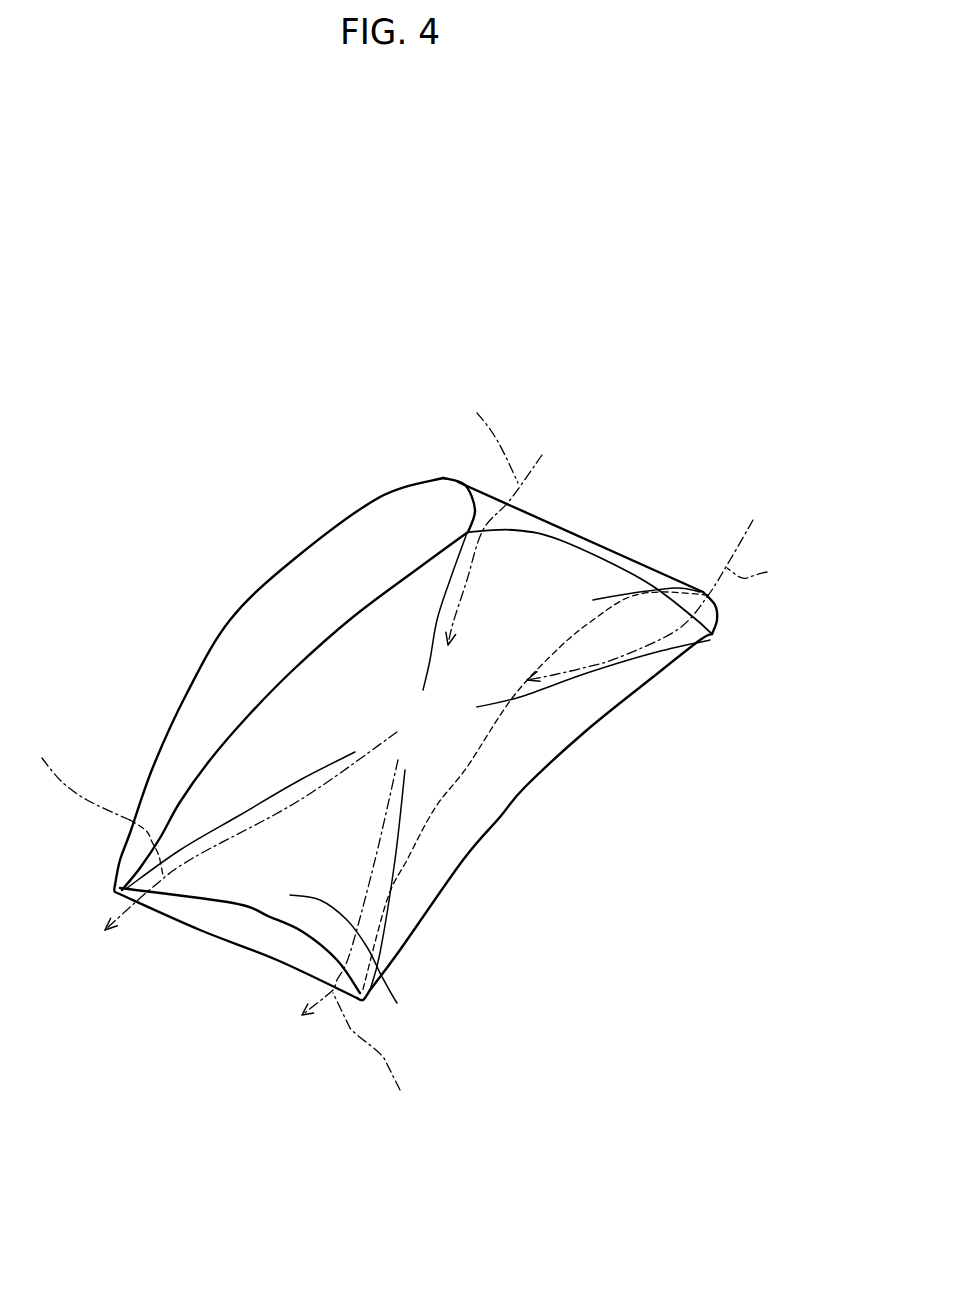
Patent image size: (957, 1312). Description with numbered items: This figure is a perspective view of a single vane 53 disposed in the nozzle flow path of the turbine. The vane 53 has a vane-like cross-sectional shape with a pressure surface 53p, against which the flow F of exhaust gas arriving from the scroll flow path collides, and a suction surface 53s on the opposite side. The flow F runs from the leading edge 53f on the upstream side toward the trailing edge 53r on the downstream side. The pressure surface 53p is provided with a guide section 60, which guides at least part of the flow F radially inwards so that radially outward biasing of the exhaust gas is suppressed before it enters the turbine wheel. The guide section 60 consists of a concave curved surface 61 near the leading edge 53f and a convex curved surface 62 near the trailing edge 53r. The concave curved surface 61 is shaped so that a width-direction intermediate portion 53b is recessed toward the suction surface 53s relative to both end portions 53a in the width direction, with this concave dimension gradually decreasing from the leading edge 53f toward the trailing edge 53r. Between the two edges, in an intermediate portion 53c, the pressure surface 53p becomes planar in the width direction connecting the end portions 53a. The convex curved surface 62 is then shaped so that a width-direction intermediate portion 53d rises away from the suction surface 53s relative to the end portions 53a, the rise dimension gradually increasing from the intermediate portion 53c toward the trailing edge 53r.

The vane 53 is at (343, 520).
The suction surface 53s is at (243, 607).
The both end portions in the width direction 53a is at (390, 590).
The width-direction intermediate portion 53b is at (617, 583).
The leading edge 53f is at (575, 543).
The pressure surface 53p is at (478, 802).
The intermediate portion 53c is at (428, 727).
The trailing edge 53r is at (200, 930).
The width-direction intermediate portion 53d is at (282, 900).
The guide section 60 is at (562, 738).
The concave curved surface 61 is at (655, 578).
The convex curved surface 62 is at (397, 1003).
The flow of exhaust gas F is at (409, 758).